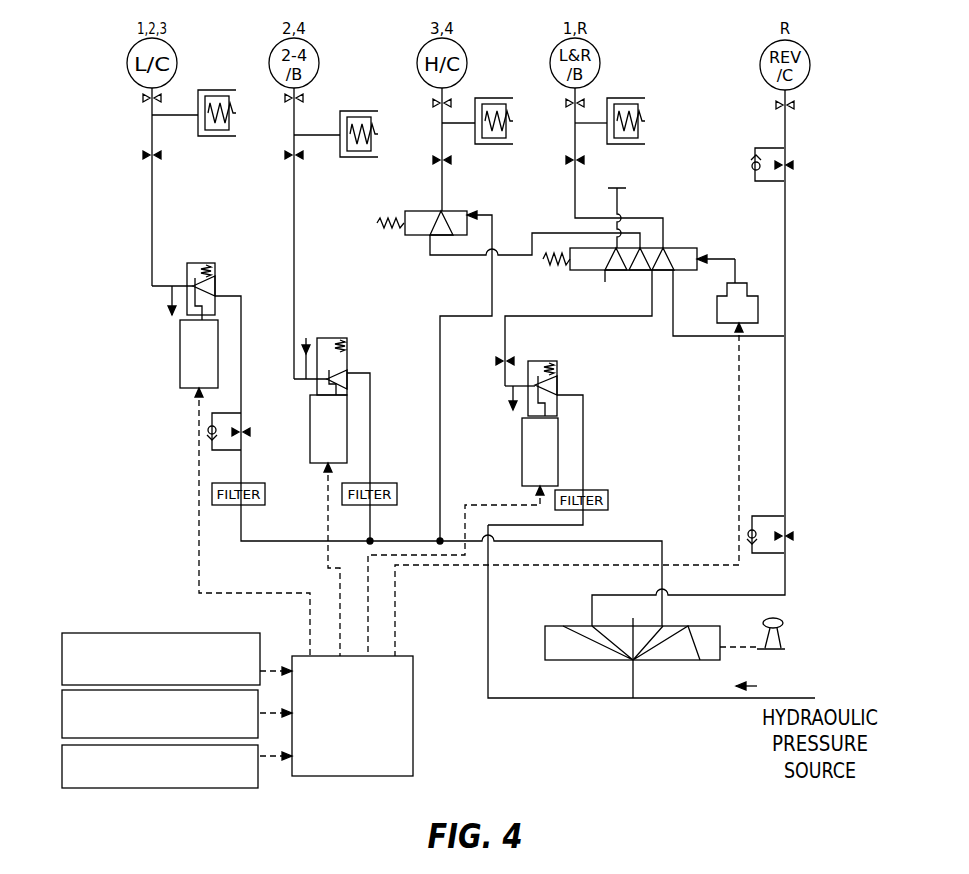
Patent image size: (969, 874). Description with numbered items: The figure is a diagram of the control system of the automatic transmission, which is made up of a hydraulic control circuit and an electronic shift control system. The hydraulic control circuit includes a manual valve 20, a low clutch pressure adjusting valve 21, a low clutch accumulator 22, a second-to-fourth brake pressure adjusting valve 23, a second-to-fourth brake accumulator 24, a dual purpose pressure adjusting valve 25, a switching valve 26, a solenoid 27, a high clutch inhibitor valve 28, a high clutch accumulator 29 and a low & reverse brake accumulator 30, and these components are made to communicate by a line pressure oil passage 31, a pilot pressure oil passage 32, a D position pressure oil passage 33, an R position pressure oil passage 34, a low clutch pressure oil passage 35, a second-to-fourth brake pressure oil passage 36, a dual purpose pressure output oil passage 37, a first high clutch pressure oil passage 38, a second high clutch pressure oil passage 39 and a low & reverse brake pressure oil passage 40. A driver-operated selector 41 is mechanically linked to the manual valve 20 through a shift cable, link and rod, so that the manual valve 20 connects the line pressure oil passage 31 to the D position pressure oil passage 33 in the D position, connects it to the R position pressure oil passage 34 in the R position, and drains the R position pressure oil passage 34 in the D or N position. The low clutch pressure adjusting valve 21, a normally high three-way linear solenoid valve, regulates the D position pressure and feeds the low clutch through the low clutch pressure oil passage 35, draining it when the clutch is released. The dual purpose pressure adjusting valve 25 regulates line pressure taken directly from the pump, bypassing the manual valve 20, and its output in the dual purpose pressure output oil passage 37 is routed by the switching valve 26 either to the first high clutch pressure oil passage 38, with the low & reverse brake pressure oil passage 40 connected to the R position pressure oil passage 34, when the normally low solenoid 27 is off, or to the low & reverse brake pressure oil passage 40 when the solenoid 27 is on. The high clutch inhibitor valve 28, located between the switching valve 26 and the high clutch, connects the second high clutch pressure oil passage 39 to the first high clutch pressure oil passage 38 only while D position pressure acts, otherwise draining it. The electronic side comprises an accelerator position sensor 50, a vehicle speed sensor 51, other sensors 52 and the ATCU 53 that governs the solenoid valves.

The manual valve 20 is at (545, 648).
The low clutch pressure adjusting valve 21 is at (180, 355).
The low clutch accumulator 22 is at (215, 138).
The 2-4 brake pressure adjusting valve 23 is at (310, 428).
The 2-4 brake accumulator 24 is at (352, 160).
The dual purpose pressure adjusting valve 25 is at (522, 458).
The switching valve 26 is at (672, 250).
The solenoid 27 is at (717, 310).
The high clutch inhibitor valve 28 is at (420, 213).
The high clutch accumulator 29 is at (490, 100).
The low & reverse brake accumulator 30 is at (630, 147).
The line pressure oil passage 31 is at (690, 700).
The pilot pressure oil passage 32 is at (602, 276).
The D position pressure oil passage 33 is at (625, 543).
The R position pressure oil passage 34 is at (740, 597).
The low clutch pressure oil passage 35 is at (152, 212).
The 2-4 brake pressure oil passage 36 is at (294, 265).
The dual purpose pressure output oil passage 37 is at (602, 318).
The first high clutch pressure oil passage 38 is at (553, 235).
The second high clutch pressure oil passage 39 is at (442, 183).
The low & reverse brake pressure oil passage 40 is at (575, 180).
The selector 41 is at (785, 622).
The accelerator position sensor 50 is at (62, 658).
The vehicle speed sensor 51 is at (62, 714).
The other sensors 52 is at (62, 762).
The ATCU 53 is at (413, 722).